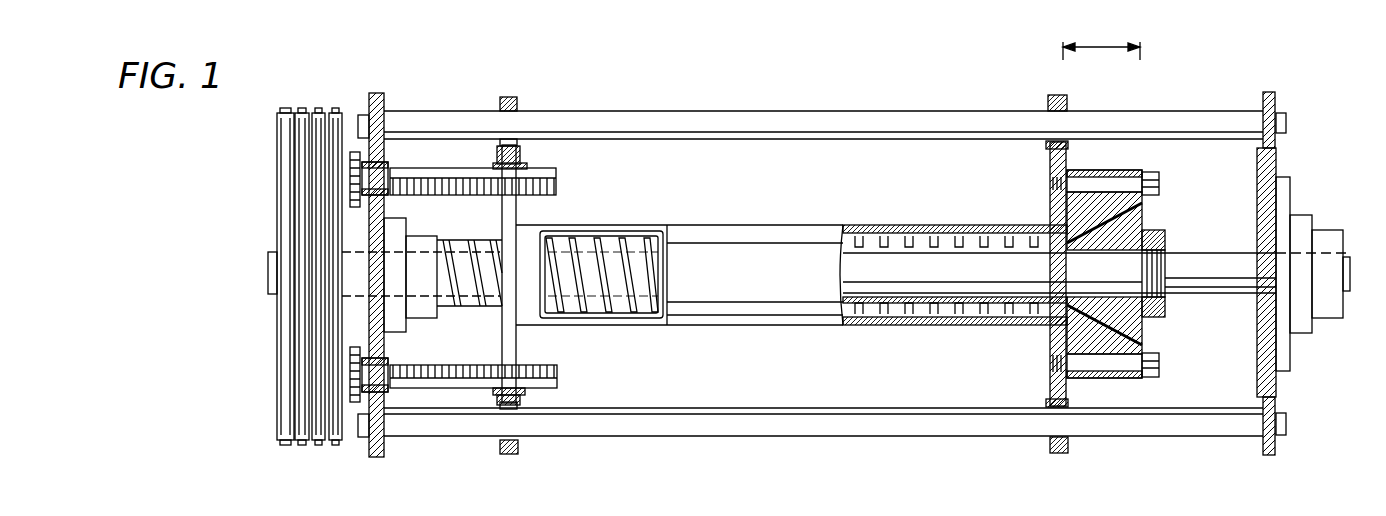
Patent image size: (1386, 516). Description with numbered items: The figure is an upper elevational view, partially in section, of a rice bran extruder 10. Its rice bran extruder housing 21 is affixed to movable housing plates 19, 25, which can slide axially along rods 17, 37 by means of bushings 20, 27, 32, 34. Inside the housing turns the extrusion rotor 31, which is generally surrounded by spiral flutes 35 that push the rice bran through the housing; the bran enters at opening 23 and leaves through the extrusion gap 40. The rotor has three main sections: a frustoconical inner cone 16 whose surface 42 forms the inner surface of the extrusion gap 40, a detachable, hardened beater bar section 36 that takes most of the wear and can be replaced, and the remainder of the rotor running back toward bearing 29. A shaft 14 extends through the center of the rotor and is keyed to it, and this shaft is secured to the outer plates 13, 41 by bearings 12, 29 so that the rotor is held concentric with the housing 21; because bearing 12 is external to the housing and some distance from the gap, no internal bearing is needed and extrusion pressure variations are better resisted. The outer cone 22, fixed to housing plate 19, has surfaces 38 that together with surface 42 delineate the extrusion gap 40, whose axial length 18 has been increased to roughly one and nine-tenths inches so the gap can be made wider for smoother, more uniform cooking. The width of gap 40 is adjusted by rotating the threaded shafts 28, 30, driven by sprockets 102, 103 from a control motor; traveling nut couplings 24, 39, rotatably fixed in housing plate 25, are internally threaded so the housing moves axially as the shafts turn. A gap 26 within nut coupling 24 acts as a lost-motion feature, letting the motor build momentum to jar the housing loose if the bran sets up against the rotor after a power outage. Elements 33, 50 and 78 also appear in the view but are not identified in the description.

The rice bran extruder 10 is at (1300, 461).
The bearing 12 is at (1303, 228).
The outer plate 13 is at (1277, 149).
The shaft 14 is at (1210, 262).
The inner cone 16 is at (1130, 225).
The rod 17 is at (722, 118).
The axial length 18 is at (1100, 48).
The housing plate 19 is at (1048, 158).
The bushing 20 is at (1048, 100).
The rice bran extruder housing 21 is at (778, 303).
The outer cone 22 is at (1068, 200).
The opening 23 is at (588, 225).
The traveling nut coupling 24 is at (527, 165).
The housing plate 25 is at (517, 216).
The gap 26 is at (519, 160).
The bushing 27 is at (508, 97).
The shaft 28 is at (444, 168).
The bearing 29 is at (393, 265).
The shaft 30 is at (440, 387).
The extrusion rotor 31 is at (465, 273).
The bushing 32 is at (507, 455).
The spring housing 33 is at (642, 287).
The bushing 34 is at (1050, 444).
The spiral flutes 35 is at (603, 327).
The beater bar section 36 is at (950, 280).
The rod 37 is at (665, 425).
The surfaces 38 is at (1062, 338).
The traveling nut coupling 39 is at (527, 397).
The extrusion gap 40 is at (1112, 313).
The outer plate 41 is at (377, 217).
The surface 42 is at (1160, 311).
The pulley 50 is at (280, 312).
The belt 78 is at (719, 501).
The sprocket 102 is at (352, 396).
The sprocket 103 is at (352, 152).